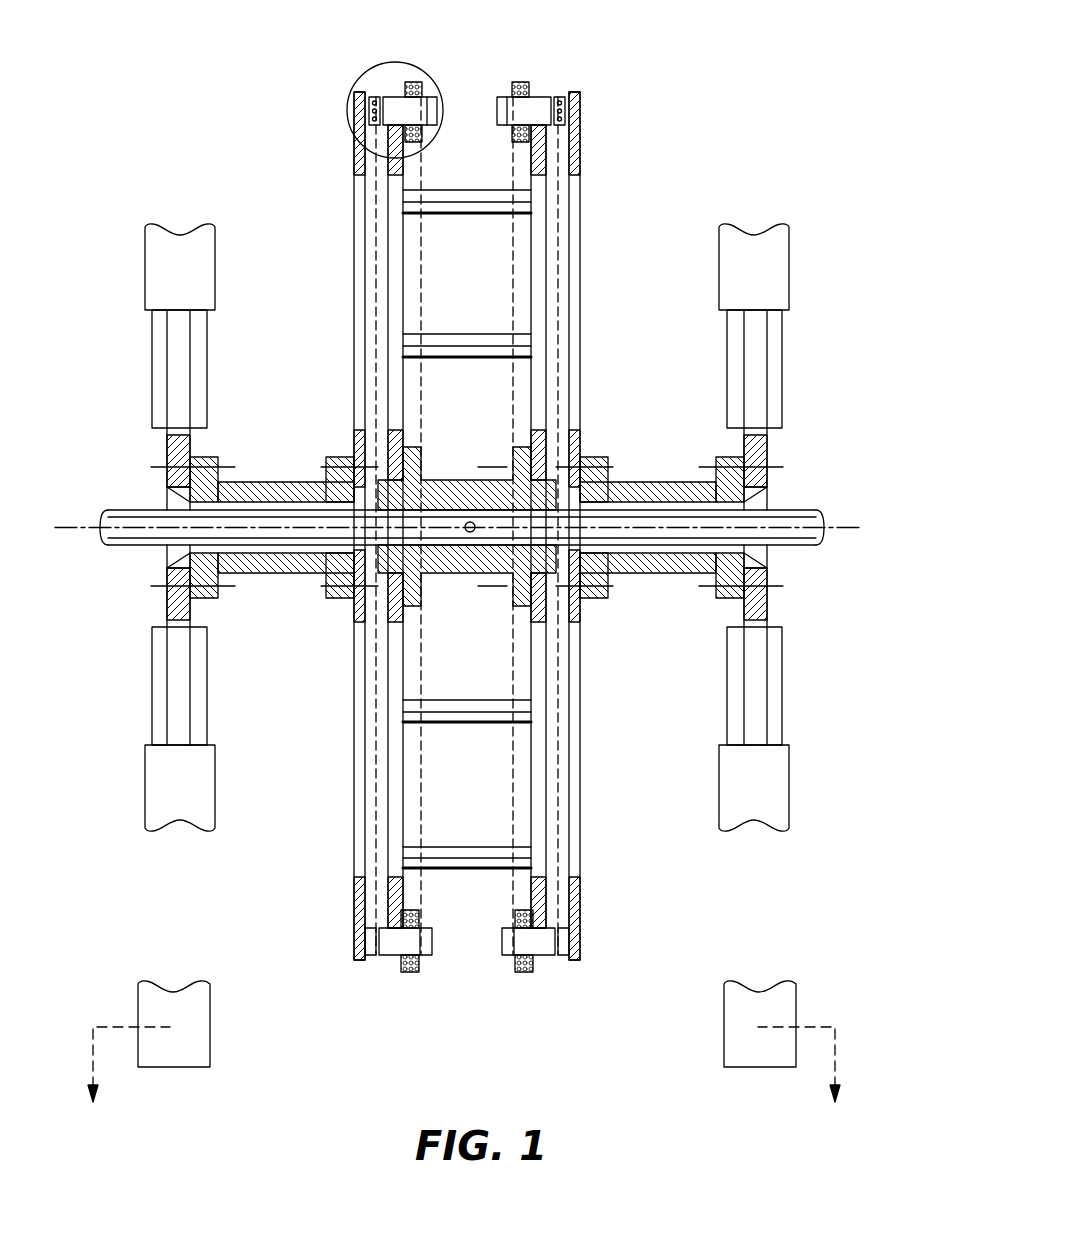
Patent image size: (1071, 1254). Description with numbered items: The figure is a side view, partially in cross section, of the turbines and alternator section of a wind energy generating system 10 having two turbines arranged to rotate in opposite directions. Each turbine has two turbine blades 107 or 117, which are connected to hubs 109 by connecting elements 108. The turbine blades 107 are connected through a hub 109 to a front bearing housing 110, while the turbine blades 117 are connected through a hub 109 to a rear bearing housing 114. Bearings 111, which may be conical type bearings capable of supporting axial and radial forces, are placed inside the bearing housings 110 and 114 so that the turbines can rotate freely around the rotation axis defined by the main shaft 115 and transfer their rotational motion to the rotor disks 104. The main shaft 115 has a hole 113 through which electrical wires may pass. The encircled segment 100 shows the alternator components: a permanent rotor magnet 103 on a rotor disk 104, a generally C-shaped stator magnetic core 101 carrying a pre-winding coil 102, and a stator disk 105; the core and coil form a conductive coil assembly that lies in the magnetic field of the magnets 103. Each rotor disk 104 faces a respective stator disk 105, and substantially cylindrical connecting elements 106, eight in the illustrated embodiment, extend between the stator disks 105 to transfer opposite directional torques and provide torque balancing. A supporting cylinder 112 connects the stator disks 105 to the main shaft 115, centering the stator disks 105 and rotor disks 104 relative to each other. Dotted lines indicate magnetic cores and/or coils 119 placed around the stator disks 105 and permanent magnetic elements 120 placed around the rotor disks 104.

The wind energy generating system 10 is at (720, 90).
The segment 100 is at (356, 83).
The stator magnetic core 101 is at (388, 96).
The pre-winding coil 102 is at (522, 81).
The rotor magnet 103 is at (566, 98).
The rotor disk 104 is at (356, 190).
The stator disk 105 is at (387, 268).
The connecting element 106 is at (490, 216).
The turbine blade 107 is at (183, 230).
The connecting element 108 is at (152, 354).
The hub 109 is at (167, 398).
The front bearing housing 110 is at (270, 480).
The bearing 111 is at (607, 468).
The supporting cylinder 112 is at (463, 480).
The hole 113 is at (468, 533).
The rear bearing housing 114 is at (620, 578).
The main shaft 115 is at (797, 512).
The turbine blade 117 is at (790, 228).
The magnetic cores and/or coils 119 is at (513, 682).
The permanent magnetic element 120 is at (559, 834).